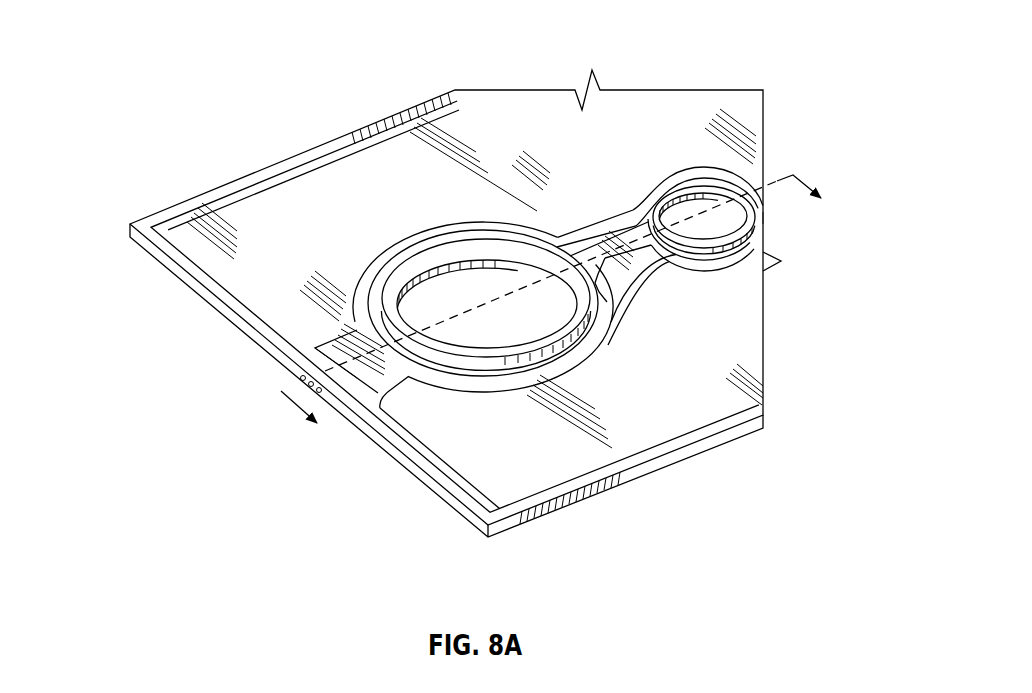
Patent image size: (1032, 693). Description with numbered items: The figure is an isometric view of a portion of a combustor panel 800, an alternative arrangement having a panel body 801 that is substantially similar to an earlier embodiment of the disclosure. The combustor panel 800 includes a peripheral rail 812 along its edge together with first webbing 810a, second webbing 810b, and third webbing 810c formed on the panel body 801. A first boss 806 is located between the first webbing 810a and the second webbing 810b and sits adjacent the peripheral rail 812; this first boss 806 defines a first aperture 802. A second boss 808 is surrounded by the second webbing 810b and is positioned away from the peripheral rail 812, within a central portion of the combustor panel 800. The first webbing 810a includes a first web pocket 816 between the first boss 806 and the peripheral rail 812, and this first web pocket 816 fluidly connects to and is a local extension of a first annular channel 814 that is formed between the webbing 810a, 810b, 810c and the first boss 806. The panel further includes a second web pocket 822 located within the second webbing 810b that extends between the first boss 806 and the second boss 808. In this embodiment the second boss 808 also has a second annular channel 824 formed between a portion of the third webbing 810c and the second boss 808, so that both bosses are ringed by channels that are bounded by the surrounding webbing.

The combustor panel 800 is at (158, 121).
The panel body 801 is at (740, 123).
The first aperture 802 is at (441, 287).
The first boss 806 is at (483, 252).
The second boss 808 is at (718, 186).
The first webbing 810a is at (306, 329).
The second webbing 810b is at (603, 222).
The third webbing 810c is at (667, 170).
The peripheral rail 812 is at (437, 495).
The first annular channel 814 is at (598, 310).
The first web pocket 816 is at (348, 325).
The second web pocket 822 is at (646, 270).
The second annular channel 824 is at (764, 218).